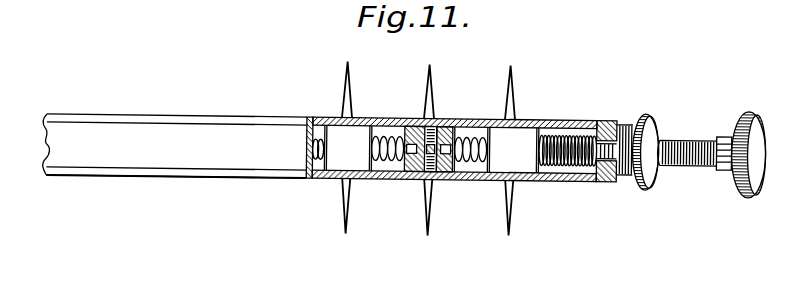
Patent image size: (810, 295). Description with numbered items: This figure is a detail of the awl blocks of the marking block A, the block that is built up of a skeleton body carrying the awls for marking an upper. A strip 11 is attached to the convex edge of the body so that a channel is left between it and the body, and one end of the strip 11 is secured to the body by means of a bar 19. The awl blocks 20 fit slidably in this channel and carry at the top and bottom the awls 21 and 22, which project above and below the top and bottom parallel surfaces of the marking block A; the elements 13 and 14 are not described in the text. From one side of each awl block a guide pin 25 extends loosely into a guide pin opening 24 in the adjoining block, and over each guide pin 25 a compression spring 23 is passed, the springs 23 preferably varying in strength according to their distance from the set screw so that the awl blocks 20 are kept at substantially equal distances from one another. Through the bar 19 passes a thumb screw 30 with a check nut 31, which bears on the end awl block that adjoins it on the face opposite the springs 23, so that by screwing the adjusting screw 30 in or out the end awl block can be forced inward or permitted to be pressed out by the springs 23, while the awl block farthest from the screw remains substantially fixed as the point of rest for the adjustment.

The marking block A is at (230, 169).
The upper wall of handle tube 13 is at (182, 113).
The lower wall of handle tube 14 is at (160, 173).
The awl block 20 is at (352, 129).
The awl 21 is at (509, 79).
The awl 22 is at (506, 207).
The compression spring 23 is at (319, 148).
The guide pin opening 24 is at (449, 123).
The guide pin 25 is at (448, 179).
The strip 11 is at (569, 135).
The bar 19 is at (605, 182).
The check nut 31 is at (643, 117).
The thumb screw 30 is at (700, 168).